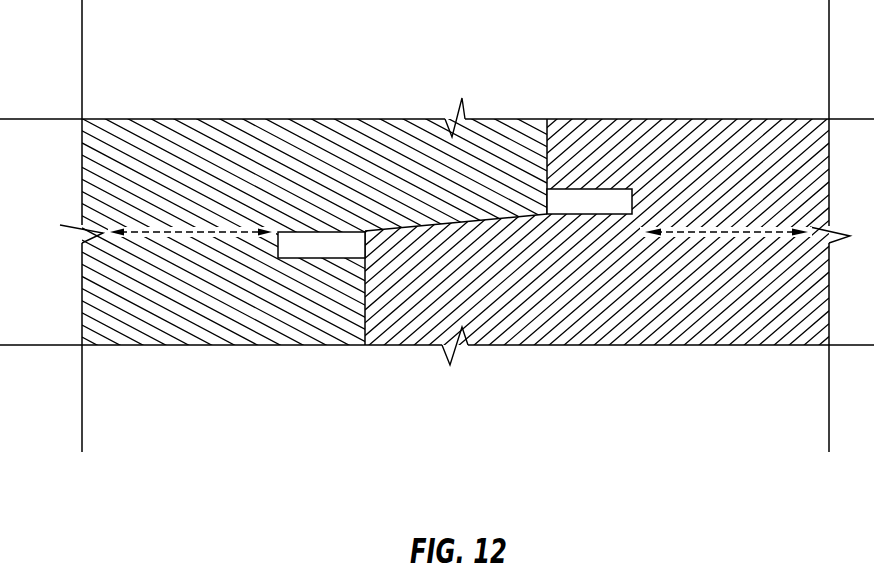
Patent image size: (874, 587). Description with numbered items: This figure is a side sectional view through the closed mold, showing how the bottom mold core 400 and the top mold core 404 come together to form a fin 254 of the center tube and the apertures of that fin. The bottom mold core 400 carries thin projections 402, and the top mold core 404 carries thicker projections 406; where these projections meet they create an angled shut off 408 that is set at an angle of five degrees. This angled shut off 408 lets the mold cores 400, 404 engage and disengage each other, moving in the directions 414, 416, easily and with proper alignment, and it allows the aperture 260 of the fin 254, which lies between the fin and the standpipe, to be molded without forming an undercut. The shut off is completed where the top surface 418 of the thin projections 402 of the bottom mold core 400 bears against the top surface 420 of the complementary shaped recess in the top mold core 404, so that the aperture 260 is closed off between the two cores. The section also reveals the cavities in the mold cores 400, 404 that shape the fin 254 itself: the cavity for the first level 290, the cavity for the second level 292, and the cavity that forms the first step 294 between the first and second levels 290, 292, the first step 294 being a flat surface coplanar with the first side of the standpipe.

The bottom mold core 400 is at (790, 331).
The thin projections 402 is at (392, 316).
The top mold core 404 is at (157, 167).
The thicker projections 406 is at (492, 142).
The angled shut off 408 is at (503, 241).
The aperture 260 is at (503, 241).
The top surface of the thin projections 418 is at (503, 241).
The top surface of the recess 420 is at (427, 223).
The fin 254 is at (514, 164).
The first level 290 is at (613, 196).
The second level 292 is at (311, 247).
The first step 294 is at (548, 196).
The direction 414 is at (245, 236).
The direction 416 is at (155, 236).